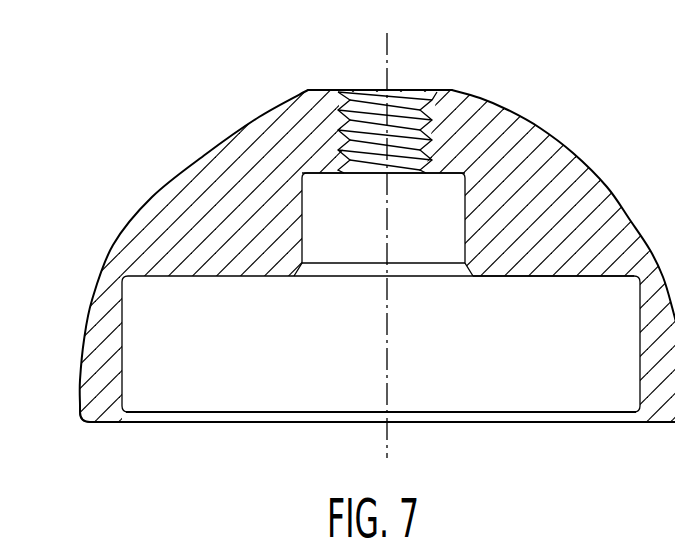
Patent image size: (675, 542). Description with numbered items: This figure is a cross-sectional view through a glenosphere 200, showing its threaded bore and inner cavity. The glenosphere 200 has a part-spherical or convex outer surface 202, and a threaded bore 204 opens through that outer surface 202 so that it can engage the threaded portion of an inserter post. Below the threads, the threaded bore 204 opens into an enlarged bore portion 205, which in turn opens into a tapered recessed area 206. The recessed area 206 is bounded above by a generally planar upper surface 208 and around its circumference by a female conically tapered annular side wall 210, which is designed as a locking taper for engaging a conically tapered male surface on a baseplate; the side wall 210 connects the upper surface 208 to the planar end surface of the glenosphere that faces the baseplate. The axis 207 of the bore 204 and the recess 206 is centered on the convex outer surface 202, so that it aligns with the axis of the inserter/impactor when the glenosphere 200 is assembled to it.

The glenosphere 200 is at (88, 251).
The outer surface 202 is at (148, 187).
The threaded bore 204 is at (403, 110).
The enlarged bore portion 205 is at (344, 240).
The tapered recessed area 206 is at (473, 361).
The axis 207 is at (386, 52).
The planar upper surface 208 is at (559, 280).
The conically tapered annular side wall 210 is at (125, 368).